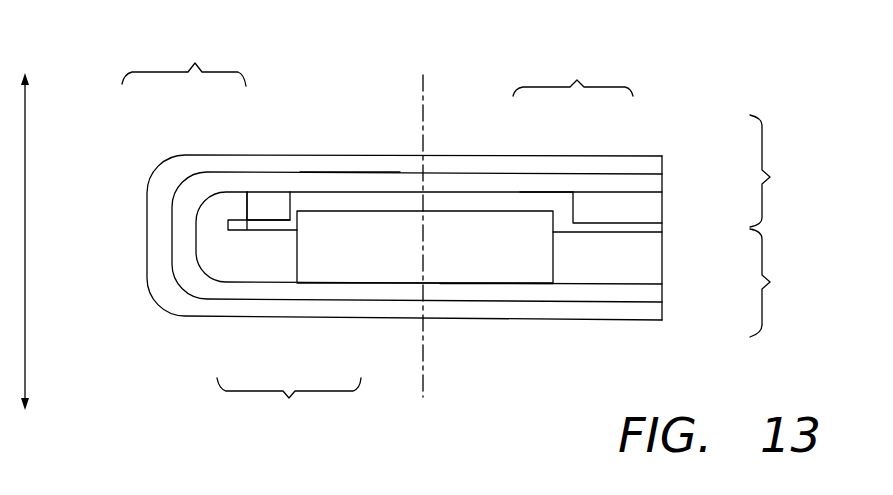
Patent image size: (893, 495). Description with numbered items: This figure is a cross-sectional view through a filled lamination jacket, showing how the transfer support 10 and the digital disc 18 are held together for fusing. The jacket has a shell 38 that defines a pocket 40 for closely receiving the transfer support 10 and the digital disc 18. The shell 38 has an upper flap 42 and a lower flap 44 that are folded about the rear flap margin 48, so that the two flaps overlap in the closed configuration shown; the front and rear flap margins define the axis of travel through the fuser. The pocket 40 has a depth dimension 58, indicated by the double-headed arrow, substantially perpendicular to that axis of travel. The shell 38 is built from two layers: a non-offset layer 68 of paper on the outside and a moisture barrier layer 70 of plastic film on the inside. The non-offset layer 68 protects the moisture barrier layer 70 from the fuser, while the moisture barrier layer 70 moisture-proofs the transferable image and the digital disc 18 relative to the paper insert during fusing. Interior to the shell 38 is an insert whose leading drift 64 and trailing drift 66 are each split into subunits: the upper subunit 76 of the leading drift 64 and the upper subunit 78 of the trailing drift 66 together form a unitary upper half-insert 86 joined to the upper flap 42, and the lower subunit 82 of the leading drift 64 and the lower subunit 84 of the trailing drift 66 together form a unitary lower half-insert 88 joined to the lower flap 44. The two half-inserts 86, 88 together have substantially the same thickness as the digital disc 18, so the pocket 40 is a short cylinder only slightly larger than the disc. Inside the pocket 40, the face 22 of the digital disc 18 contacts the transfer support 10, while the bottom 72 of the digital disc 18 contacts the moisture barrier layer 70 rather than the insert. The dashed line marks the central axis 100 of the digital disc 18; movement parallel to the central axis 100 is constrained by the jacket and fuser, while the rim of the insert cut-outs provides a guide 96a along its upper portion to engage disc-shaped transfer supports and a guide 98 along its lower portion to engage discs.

The transfer support 10 is at (267, 155).
The digital disc 18 is at (387, 241).
The face 22 is at (347, 211).
The shell 38 is at (288, 405).
The pocket 40 is at (466, 200).
The upper flap 42 is at (775, 178).
The lower flap 44 is at (775, 282).
The rear flap margin 48 is at (140, 223).
The depth dimension 58 is at (25, 277).
The leading drift 64 is at (577, 80).
The trailing drift 66 is at (195, 62).
The non-offset layer 68 is at (662, 165).
The moisture barrier layer 70 is at (662, 183).
The bottom 72 is at (484, 284).
The upper subunit of leading drift 76 is at (548, 192).
The upper subunit of trailing drift 78 is at (238, 192).
The lower subunit of leading drift 82 is at (608, 232).
The lower subunit of trailing drift 84 is at (246, 192).
The upper half-insert 86 is at (662, 210).
The lower half-insert 88 is at (662, 258).
The guide 96a is at (553, 258).
The guide 98 is at (297, 243).
The central axis 100 is at (424, 372).